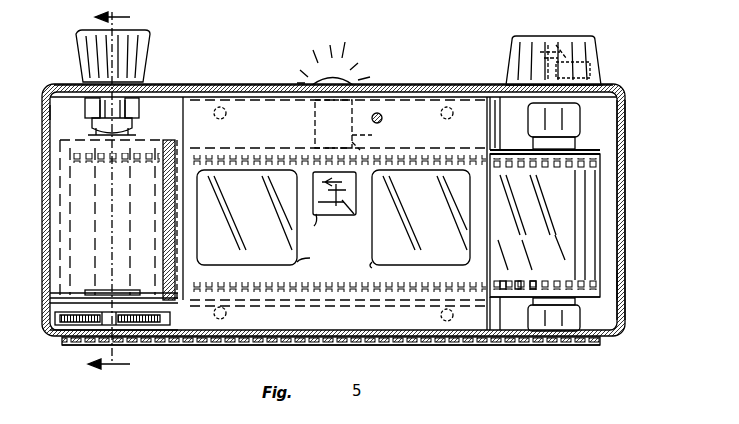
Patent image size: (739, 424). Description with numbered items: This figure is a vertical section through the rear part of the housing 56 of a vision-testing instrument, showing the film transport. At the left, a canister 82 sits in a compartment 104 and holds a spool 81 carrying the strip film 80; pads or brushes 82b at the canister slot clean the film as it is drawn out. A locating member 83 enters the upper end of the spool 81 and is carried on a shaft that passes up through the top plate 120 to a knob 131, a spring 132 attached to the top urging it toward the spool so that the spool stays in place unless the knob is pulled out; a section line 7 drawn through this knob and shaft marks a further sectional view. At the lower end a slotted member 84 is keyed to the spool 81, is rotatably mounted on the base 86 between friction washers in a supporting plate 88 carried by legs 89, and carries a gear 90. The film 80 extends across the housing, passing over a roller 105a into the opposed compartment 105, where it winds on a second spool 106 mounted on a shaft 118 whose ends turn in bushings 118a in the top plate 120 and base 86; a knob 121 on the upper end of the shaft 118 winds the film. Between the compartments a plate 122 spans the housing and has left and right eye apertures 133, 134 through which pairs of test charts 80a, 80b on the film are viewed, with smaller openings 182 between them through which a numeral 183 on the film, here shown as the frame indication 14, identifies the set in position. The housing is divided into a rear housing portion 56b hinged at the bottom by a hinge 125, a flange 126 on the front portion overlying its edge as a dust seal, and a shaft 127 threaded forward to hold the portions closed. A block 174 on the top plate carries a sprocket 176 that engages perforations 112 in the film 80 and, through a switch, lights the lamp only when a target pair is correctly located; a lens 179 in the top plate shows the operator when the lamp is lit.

The section line 7- 7 is at (116, 193).
The exposure counter frame 14 is at (334, 193).
The housing 56 is at (625, 233).
The rear housing portion 56b is at (625, 279).
The strip film 80 is at (238, 155).
The test chart 80a is at (245, 178).
The test chart 80b is at (408, 178).
The spool 81 is at (155, 137).
The canister 82 is at (68, 143).
The pads or brushes 82b is at (163, 244).
The locating member 83 is at (135, 128).
The slotted member 84 is at (150, 304).
The base 86 is at (54, 338).
The supporting plate 88 is at (175, 328).
The legs 89 is at (85, 346).
The gear 90 is at (143, 344).
The compartment 104 is at (58, 109).
The compartment 105 is at (605, 189).
The roller 105a is at (502, 335).
The second spool 106 is at (600, 150).
The perforations 112 is at (534, 282).
The shaft 118 is at (570, 58).
The bushings 118a is at (580, 118).
The top plate 120 is at (405, 87).
The knob 121 is at (512, 56).
The plate 122 is at (405, 346).
The hinge 125 is at (452, 348).
The flange 126 is at (42, 232).
The shaft 127 is at (382, 115).
The knob 131 is at (143, 63).
The spring 132 is at (90, 101).
The left eye aperture 133 is at (308, 269).
The right eye aperture 134 is at (374, 267).
The block 174 is at (372, 144).
The sprocket 176 is at (320, 124).
The lens 179 is at (342, 72).
The openings 182 is at (315, 231).
The numeral 183 is at (353, 224).